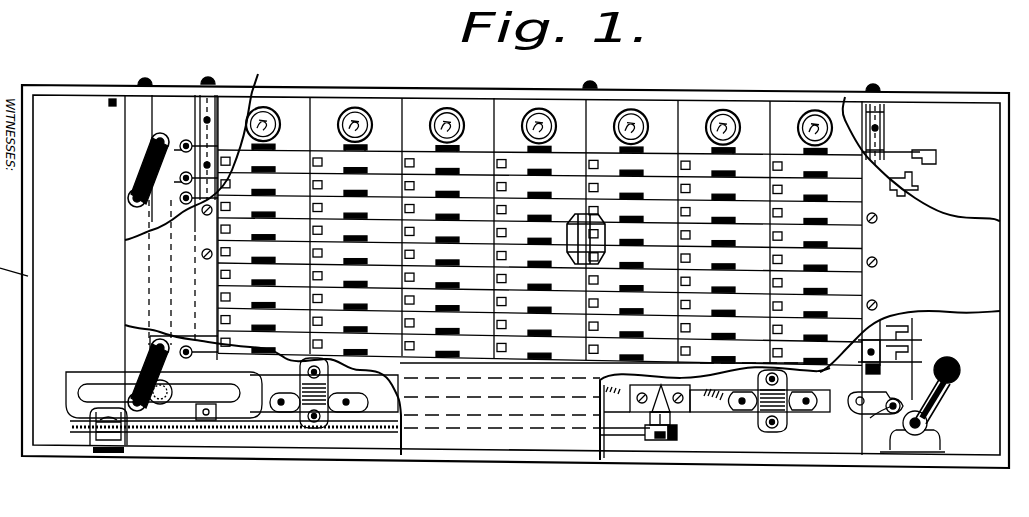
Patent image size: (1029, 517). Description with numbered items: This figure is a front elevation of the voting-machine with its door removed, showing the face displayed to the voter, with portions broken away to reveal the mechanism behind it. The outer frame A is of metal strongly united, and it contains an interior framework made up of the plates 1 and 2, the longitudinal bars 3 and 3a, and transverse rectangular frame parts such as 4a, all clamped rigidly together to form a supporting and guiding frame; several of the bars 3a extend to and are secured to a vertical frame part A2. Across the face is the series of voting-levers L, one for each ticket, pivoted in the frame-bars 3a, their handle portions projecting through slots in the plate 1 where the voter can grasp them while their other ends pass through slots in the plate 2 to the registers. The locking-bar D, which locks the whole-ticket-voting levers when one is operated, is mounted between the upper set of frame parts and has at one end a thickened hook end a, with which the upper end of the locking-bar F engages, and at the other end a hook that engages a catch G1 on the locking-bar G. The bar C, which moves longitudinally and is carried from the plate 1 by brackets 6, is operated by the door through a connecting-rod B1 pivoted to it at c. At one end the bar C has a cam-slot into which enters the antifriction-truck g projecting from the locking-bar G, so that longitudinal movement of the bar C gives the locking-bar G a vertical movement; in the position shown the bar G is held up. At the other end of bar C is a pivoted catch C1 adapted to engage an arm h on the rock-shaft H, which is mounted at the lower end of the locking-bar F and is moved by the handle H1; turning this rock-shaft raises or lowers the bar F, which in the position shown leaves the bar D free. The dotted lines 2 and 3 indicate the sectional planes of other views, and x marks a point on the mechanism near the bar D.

The frame A is at (268, 99).
The vertical frame part A2 is at (128, 188).
The locking-bar G is at (134, 214).
The catch G1 is at (146, 364).
The transverse rectangular frame part 4a is at (204, 118).
The hook end of bar D a is at (232, 158).
The voting-levers L is at (347, 144).
The locking-bar D is at (930, 152).
The pin x is at (920, 164).
The locking-bar F is at (920, 182).
The plate 2 is at (152, 130).
The longitudinal bar 3 is at (112, 362).
The longitudinal bar 3a is at (915, 344).
The rock-shaft H is at (906, 436).
The handle H1 is at (940, 400).
The arm h is at (928, 432).
The pivoted catch C1 is at (258, 398).
The bar C is at (713, 412).
The brackets 6 is at (786, 415).
The plate 1 is at (610, 395).
The connecting-rod B1 is at (290, 432).
The pivot c is at (672, 442).
The antifriction-truck g is at (178, 396).